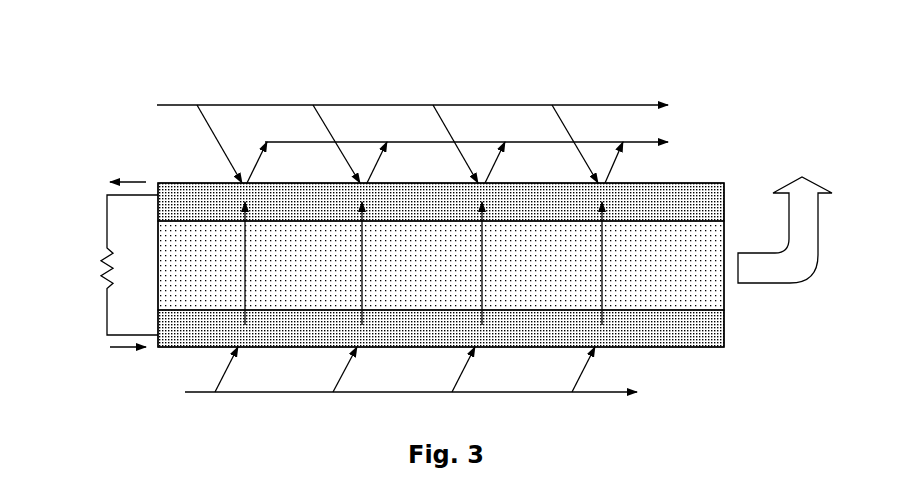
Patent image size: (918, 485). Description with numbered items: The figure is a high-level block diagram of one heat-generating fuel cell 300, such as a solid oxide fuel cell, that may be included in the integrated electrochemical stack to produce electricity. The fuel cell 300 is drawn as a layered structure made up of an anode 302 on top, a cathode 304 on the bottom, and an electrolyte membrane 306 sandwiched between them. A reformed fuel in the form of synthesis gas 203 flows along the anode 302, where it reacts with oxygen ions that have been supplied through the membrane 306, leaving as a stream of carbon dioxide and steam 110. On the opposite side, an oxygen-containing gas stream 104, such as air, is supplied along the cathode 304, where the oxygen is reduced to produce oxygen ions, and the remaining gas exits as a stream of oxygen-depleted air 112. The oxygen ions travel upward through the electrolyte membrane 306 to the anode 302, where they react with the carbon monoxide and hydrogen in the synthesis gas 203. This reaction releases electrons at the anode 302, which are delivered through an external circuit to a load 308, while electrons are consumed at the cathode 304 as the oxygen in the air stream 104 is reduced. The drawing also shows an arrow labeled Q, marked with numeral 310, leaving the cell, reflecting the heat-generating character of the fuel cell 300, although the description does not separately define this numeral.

The fuel cell 300 is at (310, 66).
The synthesis gas 203 is at (100, 96).
The stream of carbon dioxide and steam 110 is at (727, 133).
The load 308 is at (102, 250).
The anode 302 is at (708, 201).
The electrolyte membrane 306 is at (716, 297).
The cathode 304 is at (718, 332).
The heat output (Q) 310 is at (805, 258).
The oxygen-containing gas stream 104 is at (166, 403).
The stream of oxygen-depleted air 112 is at (711, 404).